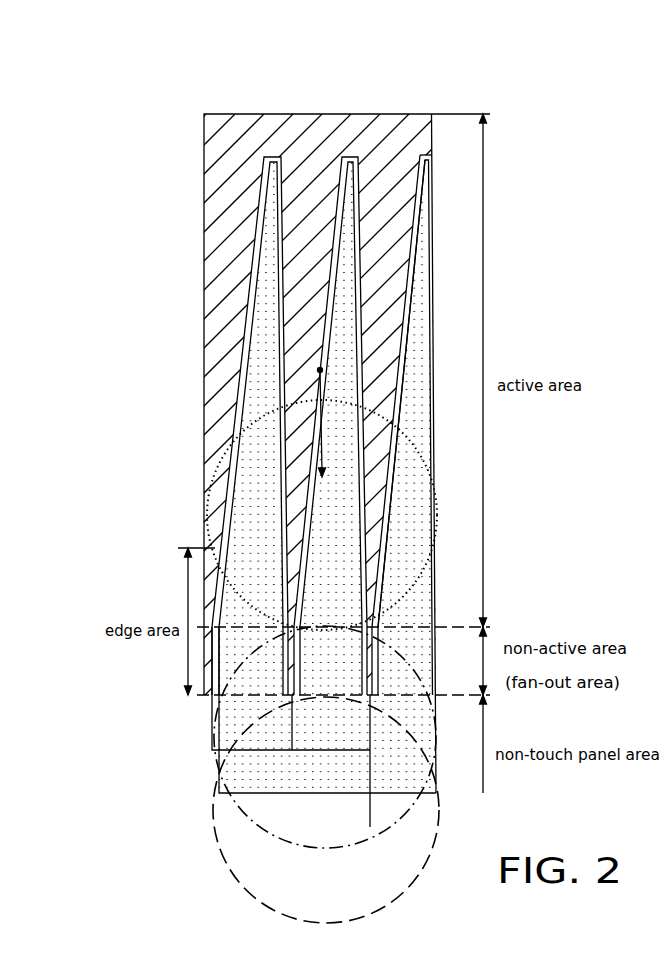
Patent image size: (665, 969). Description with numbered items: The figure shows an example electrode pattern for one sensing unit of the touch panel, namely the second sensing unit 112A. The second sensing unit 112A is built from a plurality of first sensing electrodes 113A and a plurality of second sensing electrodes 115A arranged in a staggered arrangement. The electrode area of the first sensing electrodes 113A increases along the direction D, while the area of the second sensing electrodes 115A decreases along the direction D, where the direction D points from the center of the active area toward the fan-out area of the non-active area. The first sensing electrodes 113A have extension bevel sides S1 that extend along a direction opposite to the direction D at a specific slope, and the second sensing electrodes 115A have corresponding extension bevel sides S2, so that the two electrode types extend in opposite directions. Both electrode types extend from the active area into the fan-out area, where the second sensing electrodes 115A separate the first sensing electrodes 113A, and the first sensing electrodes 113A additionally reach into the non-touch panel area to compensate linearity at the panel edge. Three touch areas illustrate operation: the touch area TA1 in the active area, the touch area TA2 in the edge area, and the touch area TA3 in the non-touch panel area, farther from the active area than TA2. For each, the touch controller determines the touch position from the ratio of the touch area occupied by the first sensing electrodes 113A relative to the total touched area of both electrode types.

The second sensing unit 112A is at (184, 167).
The second sensing electrodes 115A is at (218, 256).
The first sensing electrodes 113A is at (423, 231).
The extension bevel side S1 is at (415, 198).
The extension bevel side S2 is at (410, 263).
The touch area TA1 is at (228, 436).
The touch area TA2 is at (212, 736).
The touch area TA3 is at (214, 826).
The direction D is at (322, 438).